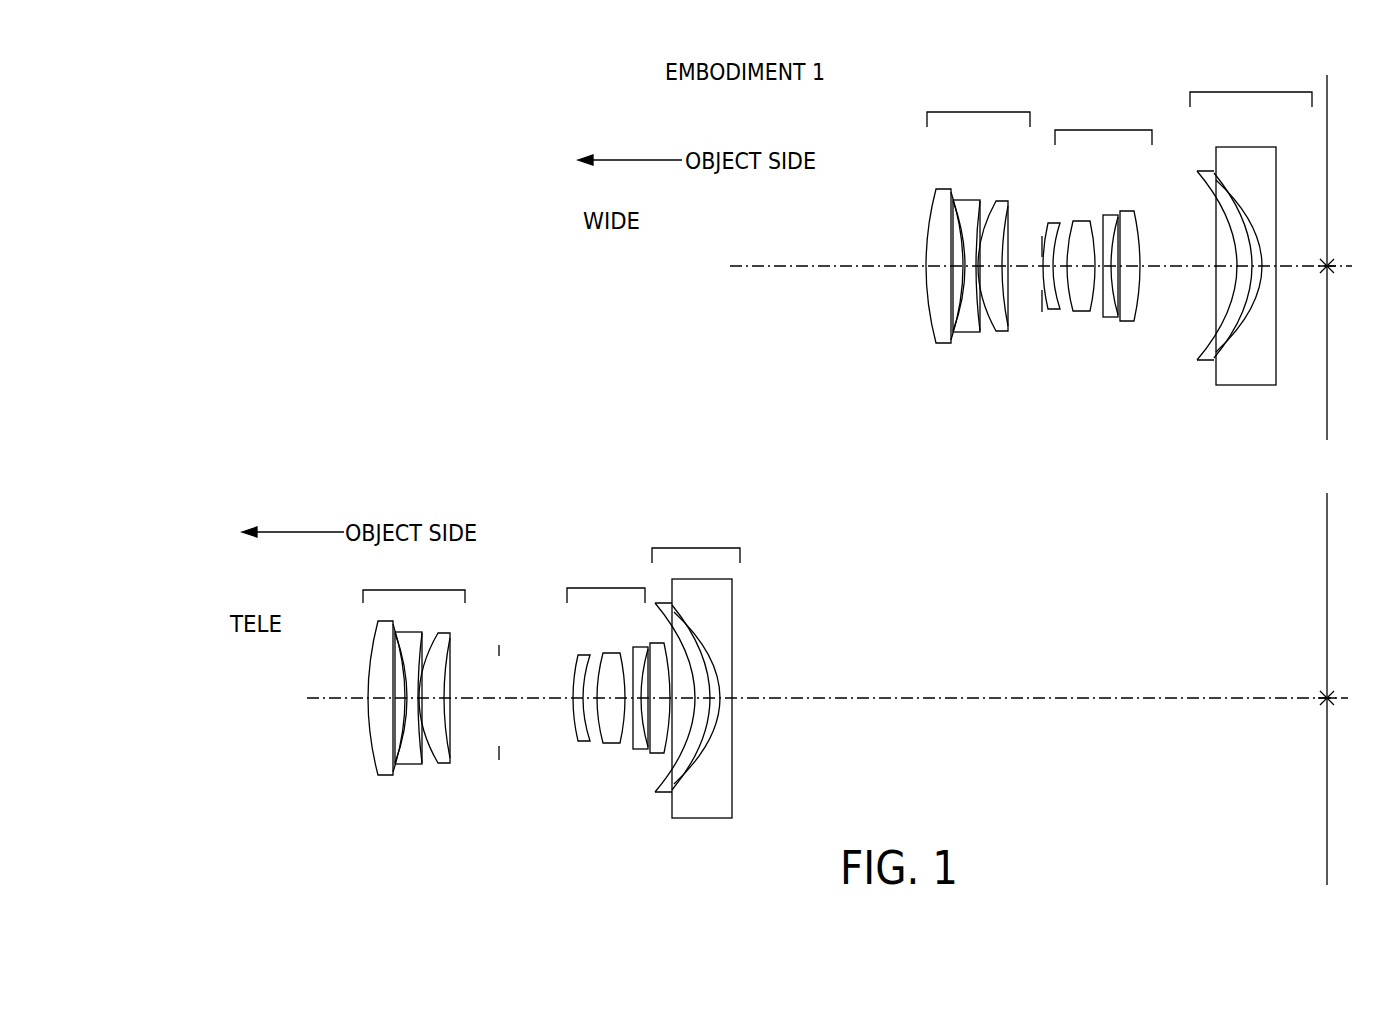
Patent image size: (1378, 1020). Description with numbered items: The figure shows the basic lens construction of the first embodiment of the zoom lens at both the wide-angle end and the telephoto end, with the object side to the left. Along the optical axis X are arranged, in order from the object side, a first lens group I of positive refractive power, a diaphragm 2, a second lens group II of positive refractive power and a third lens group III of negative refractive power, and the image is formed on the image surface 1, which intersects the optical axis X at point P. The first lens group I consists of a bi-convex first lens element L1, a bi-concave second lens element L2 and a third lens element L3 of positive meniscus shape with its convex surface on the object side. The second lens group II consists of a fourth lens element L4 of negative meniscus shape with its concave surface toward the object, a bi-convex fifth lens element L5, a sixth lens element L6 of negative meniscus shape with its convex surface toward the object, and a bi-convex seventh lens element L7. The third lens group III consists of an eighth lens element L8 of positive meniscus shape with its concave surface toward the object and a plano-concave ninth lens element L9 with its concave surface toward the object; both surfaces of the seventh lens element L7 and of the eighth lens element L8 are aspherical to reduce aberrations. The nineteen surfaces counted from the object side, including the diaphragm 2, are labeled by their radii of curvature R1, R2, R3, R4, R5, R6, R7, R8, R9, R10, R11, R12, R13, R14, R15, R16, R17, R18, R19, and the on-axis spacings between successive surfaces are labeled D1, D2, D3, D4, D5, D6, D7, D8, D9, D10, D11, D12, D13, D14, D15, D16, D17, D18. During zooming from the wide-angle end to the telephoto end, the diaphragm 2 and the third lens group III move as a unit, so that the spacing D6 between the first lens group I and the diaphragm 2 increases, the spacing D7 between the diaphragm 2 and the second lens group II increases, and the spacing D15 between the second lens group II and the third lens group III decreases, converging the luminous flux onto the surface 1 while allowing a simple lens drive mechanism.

The image surface 1 is at (1329, 82).
The diaphragm 2 is at (1042, 234).
The point of intersection P is at (1325, 268).
The optical axis X is at (778, 284).
The first lens group I is at (696, 343).
The second lens group II is at (859, 354).
The third lens group III is at (982, 315).
The first lens element L1 is at (947, 189).
The second lens element L2 is at (971, 200).
The third lens element L3 is at (1002, 201).
The fourth lens element L4 is at (1050, 222).
The fifth lens element L5 is at (1082, 220).
The sixth lens element L6 is at (1112, 215).
The seventh lens element L7 is at (1140, 211).
The eighth lens element L8 is at (1203, 171).
The ninth lens element L9 is at (1256, 147).
The radius of curvature of the first surface R1 is at (926, 302).
The radius of curvature of the second surface R2 is at (946, 315).
The radius of curvature of the third surface R3 is at (957, 318).
The radius of curvature of the fourth surface R4 is at (972, 334).
The radius of curvature of the fifth surface R5 is at (986, 326).
The radius of curvature of the sixth surface R6 is at (1003, 331).
The radius of curvature of the seventh surface R7 is at (1040, 314).
The radius of curvature of the eighth surface R8 is at (1049, 307).
The radius of curvature of the ninth surface R9 is at (1058, 312).
The radius of curvature of the tenth surface R10 is at (1072, 312).
The radius of curvature of the eleventh surface R11 is at (1090, 312).
The radius of curvature of the twelfth surface R12 is at (1104, 318).
The radius of curvature of the thirteenth surface R13 is at (1119, 322).
The radius of curvature of the fourteenth surface R14 is at (1131, 323).
The radius of curvature of the fifteenth surface R15 is at (1140, 320).
The radius of curvature of the sixteenth surface R16 is at (1195, 361).
The radius of curvature of the seventeenth surface R17 is at (1228, 352).
The radius of curvature of the eighteenth surface R18 is at (1243, 296).
The radius of curvature of the nineteenth surface R19 is at (1278, 370).
The on-axis spacing after the first surface D1 is at (935, 263).
The on-axis spacing after the second surface D2 is at (950, 262).
The on-axis spacing after the third surface D3 is at (958, 250).
The on-axis spacing after the fourth surface D4 is at (965, 268).
The on-axis spacing after the fifth surface D5 is at (985, 270).
The spacing between the first lens group and the diaphragm D6 is at (1022, 258).
The spacing between the diaphragm and the second lens group D7 is at (1022, 272).
The on-axis spacing after the eighth surface D8 is at (1053, 262).
The on-axis spacing after the ninth surface D9 is at (1085, 258).
The on-axis spacing after the tenth surface D10 is at (1100, 262).
The on-axis spacing after the eleventh surface D11 is at (1110, 265).
The on-axis spacing after the twelfth surface D12 is at (1115, 285).
The on-axis spacing after the thirteenth surface D13 is at (1125, 270).
The on-axis spacing after the fourteenth surface D14 is at (1165, 267).
The spacing between the second lens group and the third lens group D15 is at (1240, 268).
The on-axis spacing after the sixteenth surface D16 is at (1245, 200).
The on-axis spacing after the seventeenth surface D17 is at (1258, 262).
The on-axis spacing after the eighteenth surface D18 is at (1262, 268).